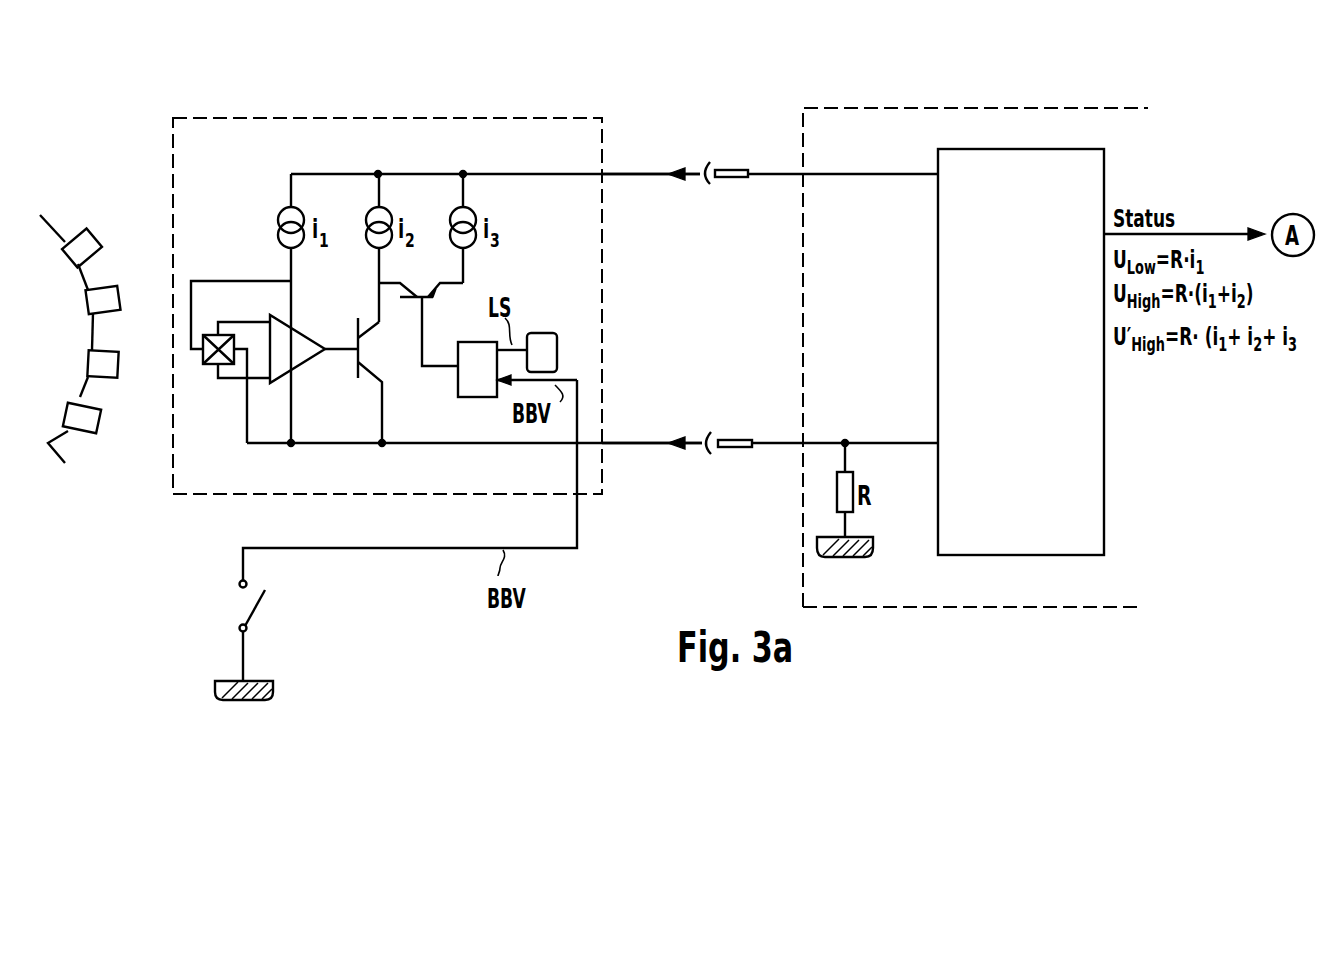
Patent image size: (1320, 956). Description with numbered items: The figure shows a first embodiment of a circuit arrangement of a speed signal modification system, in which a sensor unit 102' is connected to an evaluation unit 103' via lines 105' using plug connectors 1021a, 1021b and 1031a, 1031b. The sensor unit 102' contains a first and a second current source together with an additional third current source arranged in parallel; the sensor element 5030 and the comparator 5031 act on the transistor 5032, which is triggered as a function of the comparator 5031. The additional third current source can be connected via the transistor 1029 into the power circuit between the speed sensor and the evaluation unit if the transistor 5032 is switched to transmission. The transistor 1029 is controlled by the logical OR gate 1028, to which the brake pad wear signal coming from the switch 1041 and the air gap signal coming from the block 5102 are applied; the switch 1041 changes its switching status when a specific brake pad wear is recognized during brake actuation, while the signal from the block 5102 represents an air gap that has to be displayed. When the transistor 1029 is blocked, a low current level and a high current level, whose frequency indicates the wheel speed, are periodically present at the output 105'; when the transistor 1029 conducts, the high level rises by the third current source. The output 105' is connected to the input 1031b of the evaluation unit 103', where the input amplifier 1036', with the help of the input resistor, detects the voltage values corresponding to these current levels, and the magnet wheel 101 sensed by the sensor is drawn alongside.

The magnet wheel / encoder magnets 101 is at (97, 432).
The sensor unit 102' is at (387, 264).
The evaluation unit 103' is at (975, 317).
The output 105' is at (652, 269).
The plug connector 1021a is at (704, 164).
The plug connector 1021b is at (702, 456).
The plug connector 1031a is at (738, 178).
The input 1031b is at (735, 440).
The input amplifier 1036' is at (963, 352).
The transistor 1029 is at (426, 300).
The logical OR gate 1028 is at (470, 397).
The sensor element 5030 is at (210, 366).
The comparator 5031 is at (300, 355).
The transistor 5032 is at (360, 324).
The block 5102 is at (572, 302).
The switch 1041 is at (257, 605).